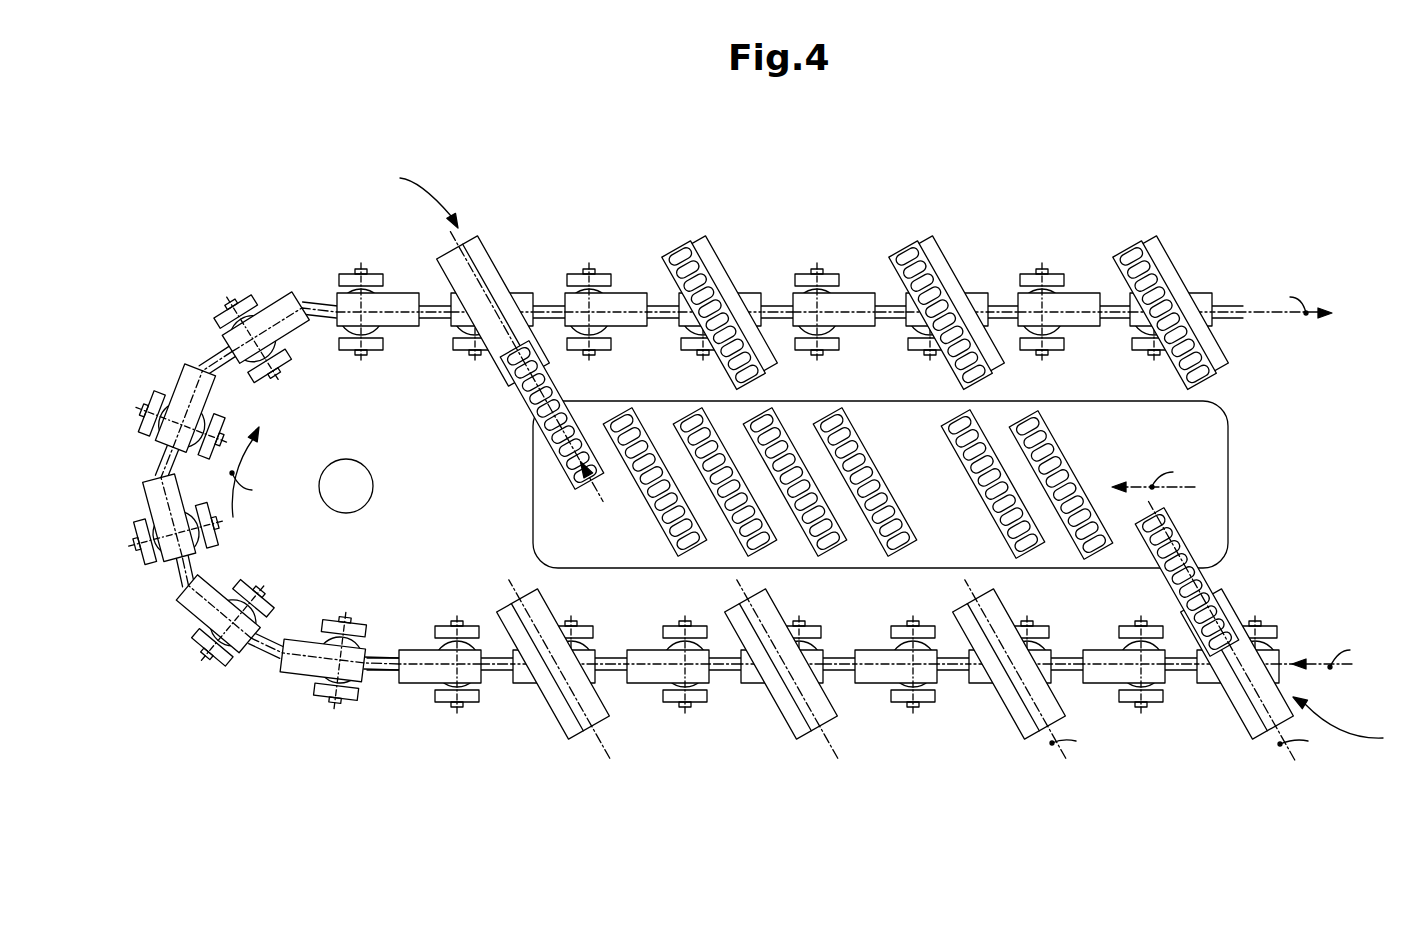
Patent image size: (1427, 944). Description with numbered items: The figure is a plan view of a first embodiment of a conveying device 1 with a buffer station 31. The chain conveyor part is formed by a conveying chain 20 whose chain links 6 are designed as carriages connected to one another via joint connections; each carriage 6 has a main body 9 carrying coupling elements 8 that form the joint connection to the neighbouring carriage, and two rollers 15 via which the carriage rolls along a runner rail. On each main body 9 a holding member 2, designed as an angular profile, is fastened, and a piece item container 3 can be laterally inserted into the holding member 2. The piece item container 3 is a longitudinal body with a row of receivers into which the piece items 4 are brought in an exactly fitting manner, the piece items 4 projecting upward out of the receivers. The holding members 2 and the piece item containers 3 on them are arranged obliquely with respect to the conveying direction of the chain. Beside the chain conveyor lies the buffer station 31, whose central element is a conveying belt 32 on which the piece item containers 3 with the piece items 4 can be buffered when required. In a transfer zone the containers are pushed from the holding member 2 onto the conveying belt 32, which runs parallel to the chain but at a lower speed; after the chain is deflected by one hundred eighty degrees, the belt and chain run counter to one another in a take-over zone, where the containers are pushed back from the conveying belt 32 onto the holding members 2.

The conveying device 1 is at (1253, 260).
The holding member 2 is at (712, 256).
The piece item container 3 is at (672, 253).
The piece items 4 is at (550, 408).
The chain link 6 is at (527, 298).
The coupling elements 8 is at (1109, 308).
The main body 9 is at (858, 298).
The rollers 15 is at (250, 376).
The conveying chain 20 is at (392, 677).
The buffer station 31 is at (1232, 508).
The conveying belt 32 is at (1212, 433).